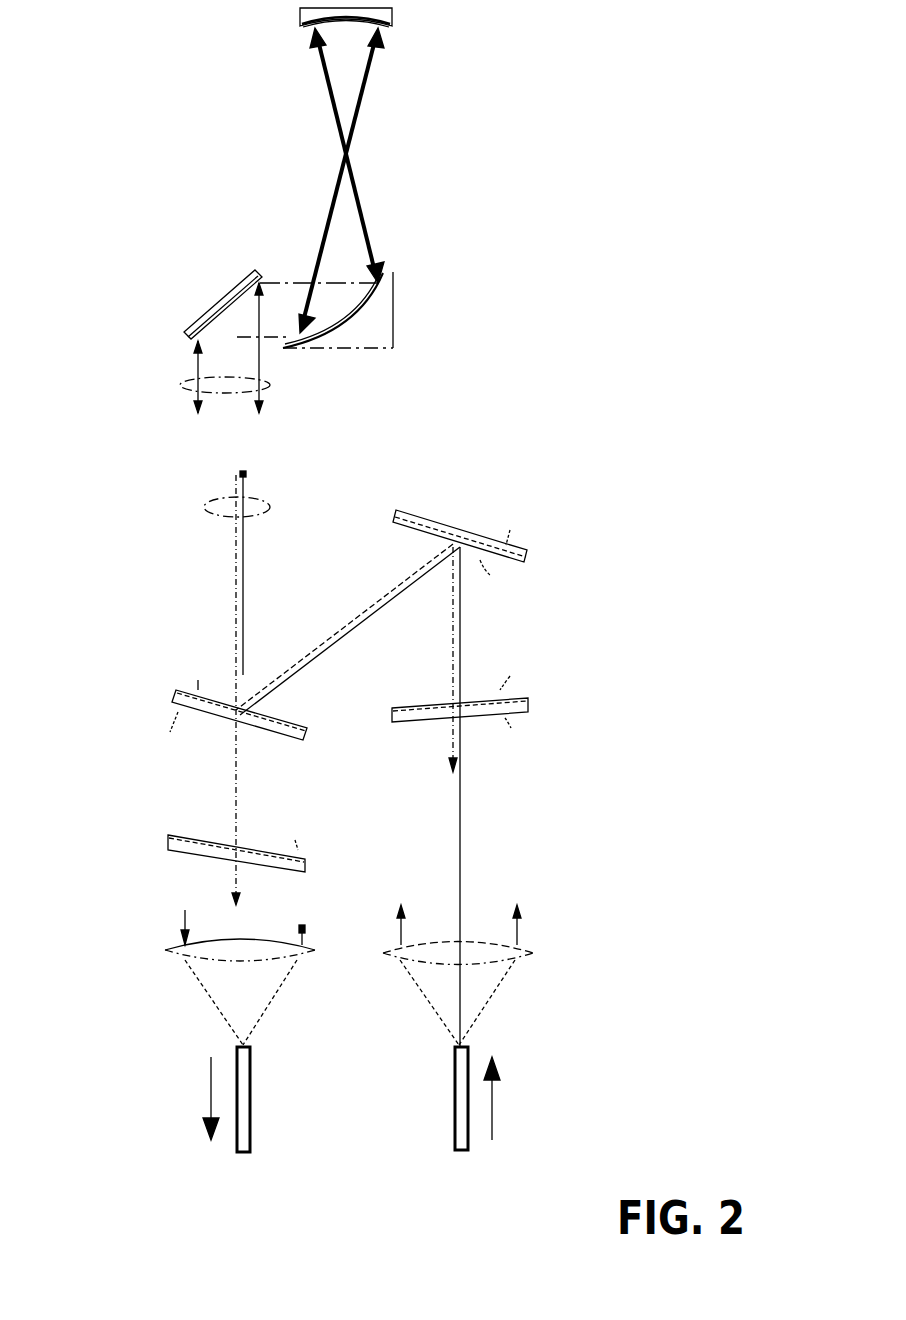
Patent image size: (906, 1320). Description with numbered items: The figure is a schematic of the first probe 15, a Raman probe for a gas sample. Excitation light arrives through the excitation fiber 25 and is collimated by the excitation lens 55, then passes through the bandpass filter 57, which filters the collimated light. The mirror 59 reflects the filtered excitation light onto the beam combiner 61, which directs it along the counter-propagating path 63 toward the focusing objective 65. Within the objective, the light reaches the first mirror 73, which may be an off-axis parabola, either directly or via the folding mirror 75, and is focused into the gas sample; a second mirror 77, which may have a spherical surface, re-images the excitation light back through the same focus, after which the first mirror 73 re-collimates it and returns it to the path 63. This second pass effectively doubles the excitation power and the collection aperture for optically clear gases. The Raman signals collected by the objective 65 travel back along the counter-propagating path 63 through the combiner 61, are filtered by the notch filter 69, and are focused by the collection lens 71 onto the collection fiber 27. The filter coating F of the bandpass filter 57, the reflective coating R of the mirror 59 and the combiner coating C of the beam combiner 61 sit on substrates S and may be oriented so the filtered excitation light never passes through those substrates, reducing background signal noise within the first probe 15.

The first probe 15 is at (484, 385).
The focusing objective 65 is at (205, 154).
The second mirror 77 is at (343, 22).
The folding mirror 75 is at (220, 310).
The first mirror 73 is at (354, 311).
The counter-propagating path 63 is at (245, 401).
The mirror 59 is at (520, 556).
The beam combiner 61 is at (180, 702).
The bandpass filter 57 is at (522, 708).
The notch filter 69 is at (180, 850).
The collection lens 71 is at (216, 946).
The collection fiber 27 is at (250, 1095).
The excitation lens 55 is at (473, 950).
The excitation fiber 25 is at (455, 1083).